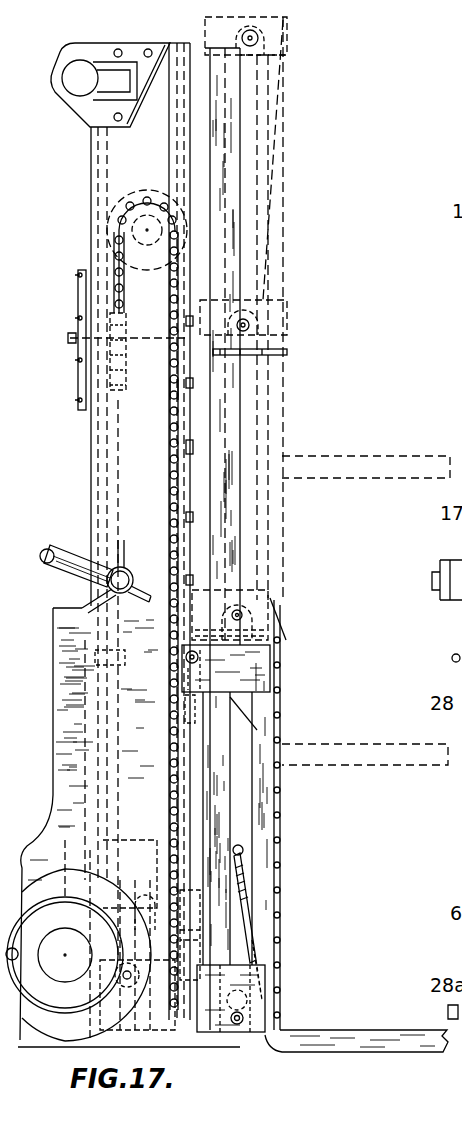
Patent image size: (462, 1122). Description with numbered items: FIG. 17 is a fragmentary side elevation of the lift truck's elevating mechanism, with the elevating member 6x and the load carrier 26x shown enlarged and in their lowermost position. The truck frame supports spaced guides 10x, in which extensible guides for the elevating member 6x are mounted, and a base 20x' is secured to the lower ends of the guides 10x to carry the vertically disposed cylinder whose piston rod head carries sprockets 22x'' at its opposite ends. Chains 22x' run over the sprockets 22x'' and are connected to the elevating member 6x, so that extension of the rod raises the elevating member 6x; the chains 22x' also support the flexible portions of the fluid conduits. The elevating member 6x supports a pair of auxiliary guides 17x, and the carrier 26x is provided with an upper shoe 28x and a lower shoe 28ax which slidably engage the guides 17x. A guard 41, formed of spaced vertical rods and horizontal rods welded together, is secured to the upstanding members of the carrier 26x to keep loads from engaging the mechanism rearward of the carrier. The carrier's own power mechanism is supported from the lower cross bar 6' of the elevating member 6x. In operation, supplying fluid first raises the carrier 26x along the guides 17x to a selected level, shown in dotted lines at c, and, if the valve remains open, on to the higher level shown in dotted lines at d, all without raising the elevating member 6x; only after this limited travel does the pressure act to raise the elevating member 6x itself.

The spaced guides 10x is at (91, 488).
The sprockets 22x'' is at (144, 603).
The chains 22x' is at (153, 407).
The auxiliary guides 17x is at (234, 556).
The upper shoe 28x is at (268, 684).
The guard 41 is at (280, 800).
The elevating member 6x is at (80, 870).
The base 20x' is at (123, 943).
The lower cross bar 6' is at (221, 922).
The lower shoe 28ax is at (222, 1040).
The load carrier 26x is at (315, 1026).
The carrier level d is at (393, 470).
The selected level c is at (395, 762).